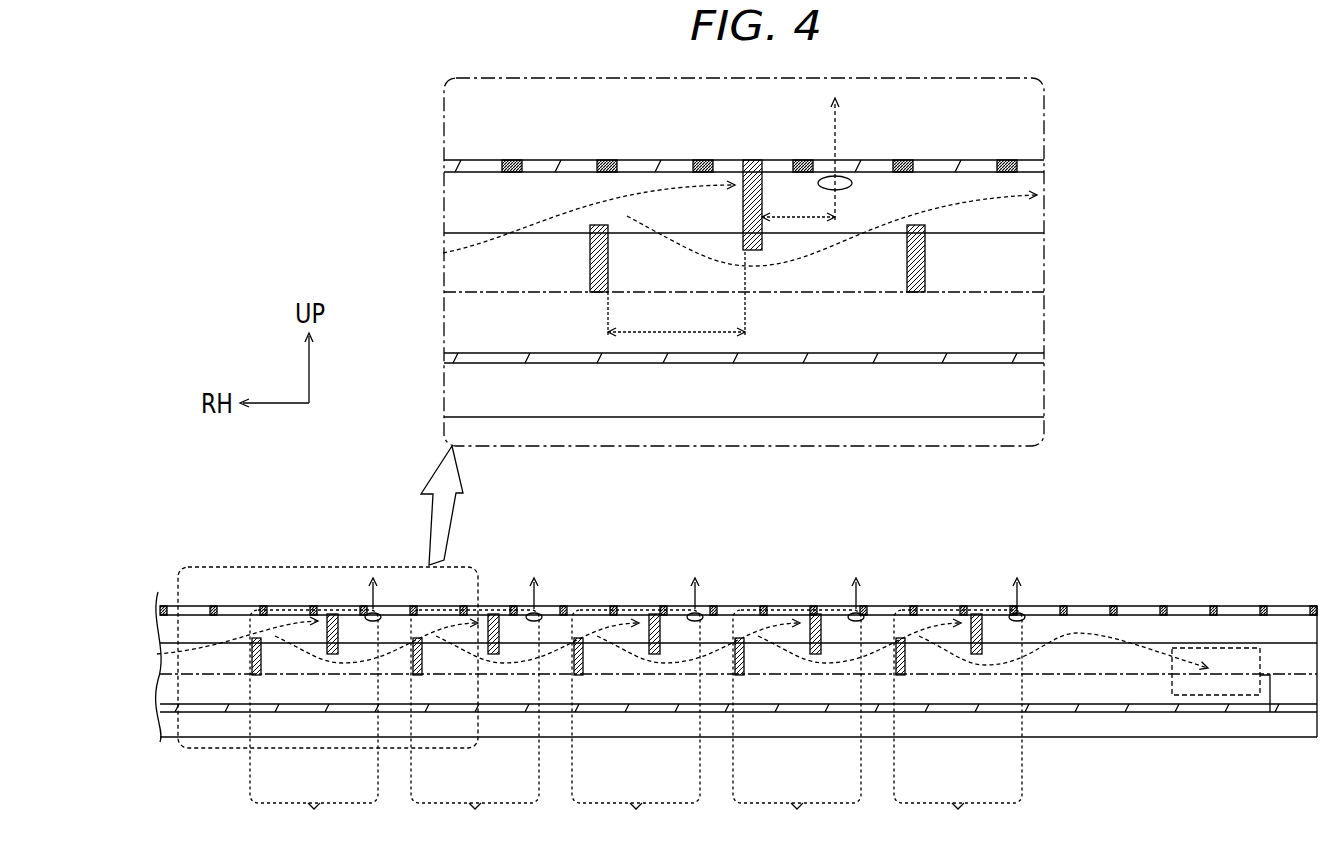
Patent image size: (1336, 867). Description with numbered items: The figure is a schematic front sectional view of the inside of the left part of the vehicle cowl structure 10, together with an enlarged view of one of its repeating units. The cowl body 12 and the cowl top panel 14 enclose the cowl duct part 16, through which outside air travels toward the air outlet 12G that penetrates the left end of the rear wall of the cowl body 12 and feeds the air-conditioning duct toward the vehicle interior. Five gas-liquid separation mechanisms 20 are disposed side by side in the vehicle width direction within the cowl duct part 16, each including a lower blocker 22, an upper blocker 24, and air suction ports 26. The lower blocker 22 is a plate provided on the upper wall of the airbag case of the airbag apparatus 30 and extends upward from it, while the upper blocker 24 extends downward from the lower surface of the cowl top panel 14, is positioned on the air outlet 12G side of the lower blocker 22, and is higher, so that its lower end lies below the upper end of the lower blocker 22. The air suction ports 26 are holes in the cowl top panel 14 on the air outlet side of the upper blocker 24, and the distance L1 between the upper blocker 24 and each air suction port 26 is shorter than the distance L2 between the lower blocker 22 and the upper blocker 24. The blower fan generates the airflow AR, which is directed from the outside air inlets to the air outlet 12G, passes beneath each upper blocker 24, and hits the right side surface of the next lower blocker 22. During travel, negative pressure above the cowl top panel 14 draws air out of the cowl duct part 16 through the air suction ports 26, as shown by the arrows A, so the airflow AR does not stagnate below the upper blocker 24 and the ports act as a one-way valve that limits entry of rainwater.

The cowl structure 10 is at (1205, 551).
The cowl body 12 is at (1030, 388).
The air outlet 12G is at (1216, 697).
The cowl top panel 14 is at (1045, 183).
The cowl duct part 16 is at (955, 282).
The gas-liquid separation mechanism 20 is at (657, 128).
The lower blocker 22 is at (596, 293).
The upper blocker 24 is at (745, 170).
The air suction port 26 is at (850, 180).
The airbag apparatus 30 is at (1015, 284).
The arrows A is at (832, 118).
The airflow AR is at (552, 217).
The distance between upper blocker and air suction port L1 is at (798, 203).
The distance between lower blocker and upper blocker L2 is at (676, 294).